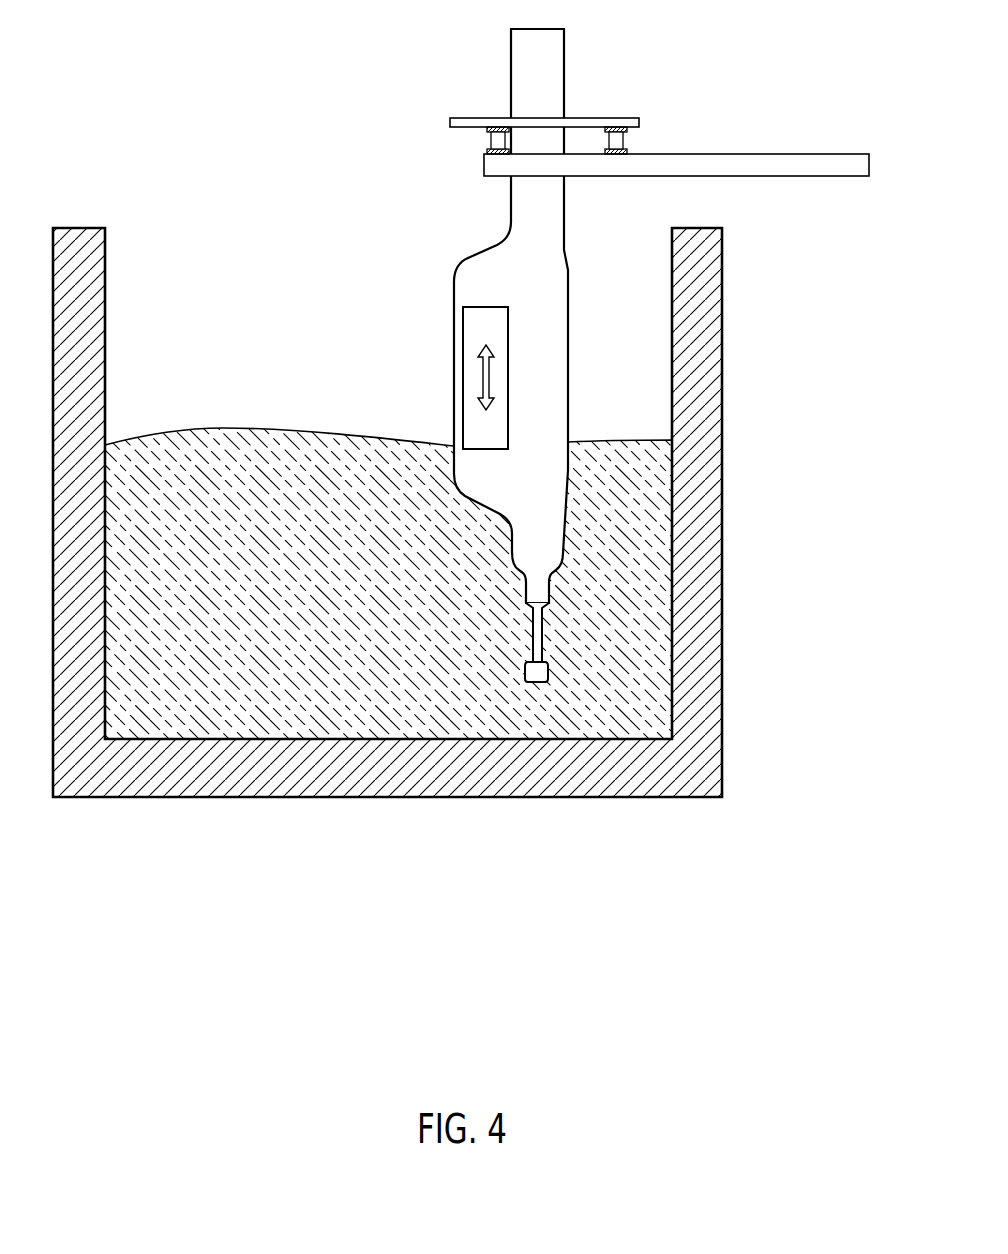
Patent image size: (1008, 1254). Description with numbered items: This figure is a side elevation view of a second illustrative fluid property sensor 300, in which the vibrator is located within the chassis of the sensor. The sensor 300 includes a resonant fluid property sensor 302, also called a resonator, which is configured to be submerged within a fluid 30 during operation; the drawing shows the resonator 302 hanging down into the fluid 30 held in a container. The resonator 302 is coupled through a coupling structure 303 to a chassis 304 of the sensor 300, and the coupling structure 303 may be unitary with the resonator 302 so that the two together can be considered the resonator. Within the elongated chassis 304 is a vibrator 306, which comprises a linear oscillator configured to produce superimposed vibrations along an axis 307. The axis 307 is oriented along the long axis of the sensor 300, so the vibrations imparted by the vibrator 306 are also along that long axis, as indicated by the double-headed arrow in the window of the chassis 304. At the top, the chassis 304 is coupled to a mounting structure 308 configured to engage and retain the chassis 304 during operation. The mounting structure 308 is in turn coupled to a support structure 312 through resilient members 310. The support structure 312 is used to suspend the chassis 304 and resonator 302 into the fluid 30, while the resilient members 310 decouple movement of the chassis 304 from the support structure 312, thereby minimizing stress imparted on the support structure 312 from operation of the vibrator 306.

The fluid 30 is at (160, 452).
The fluid property sensor 300 is at (373, 114).
The resonant fluid property sensor 302 is at (548, 662).
The coupling structure 303 is at (537, 632).
The chassis 304 is at (542, 530).
The vibrator 306 is at (463, 355).
The axis 307 is at (487, 373).
The mounting structure 308 is at (580, 118).
The resilient members 310 is at (487, 134).
The support structure 312 is at (812, 153).